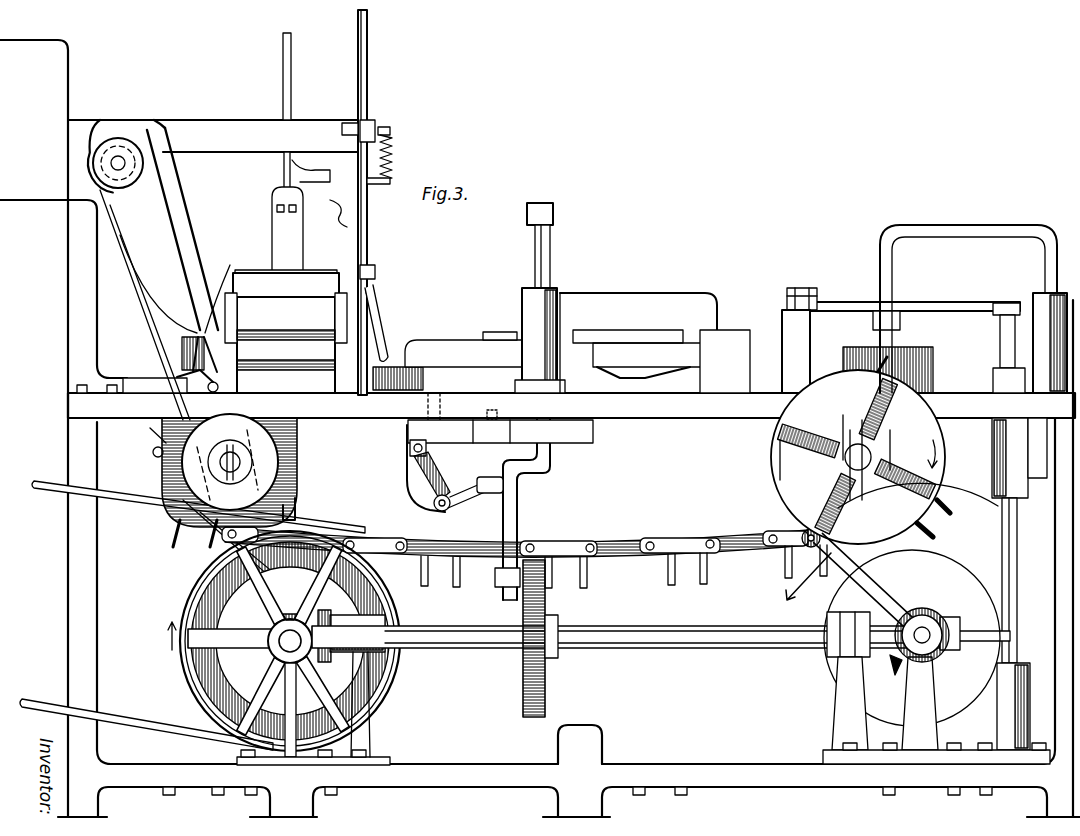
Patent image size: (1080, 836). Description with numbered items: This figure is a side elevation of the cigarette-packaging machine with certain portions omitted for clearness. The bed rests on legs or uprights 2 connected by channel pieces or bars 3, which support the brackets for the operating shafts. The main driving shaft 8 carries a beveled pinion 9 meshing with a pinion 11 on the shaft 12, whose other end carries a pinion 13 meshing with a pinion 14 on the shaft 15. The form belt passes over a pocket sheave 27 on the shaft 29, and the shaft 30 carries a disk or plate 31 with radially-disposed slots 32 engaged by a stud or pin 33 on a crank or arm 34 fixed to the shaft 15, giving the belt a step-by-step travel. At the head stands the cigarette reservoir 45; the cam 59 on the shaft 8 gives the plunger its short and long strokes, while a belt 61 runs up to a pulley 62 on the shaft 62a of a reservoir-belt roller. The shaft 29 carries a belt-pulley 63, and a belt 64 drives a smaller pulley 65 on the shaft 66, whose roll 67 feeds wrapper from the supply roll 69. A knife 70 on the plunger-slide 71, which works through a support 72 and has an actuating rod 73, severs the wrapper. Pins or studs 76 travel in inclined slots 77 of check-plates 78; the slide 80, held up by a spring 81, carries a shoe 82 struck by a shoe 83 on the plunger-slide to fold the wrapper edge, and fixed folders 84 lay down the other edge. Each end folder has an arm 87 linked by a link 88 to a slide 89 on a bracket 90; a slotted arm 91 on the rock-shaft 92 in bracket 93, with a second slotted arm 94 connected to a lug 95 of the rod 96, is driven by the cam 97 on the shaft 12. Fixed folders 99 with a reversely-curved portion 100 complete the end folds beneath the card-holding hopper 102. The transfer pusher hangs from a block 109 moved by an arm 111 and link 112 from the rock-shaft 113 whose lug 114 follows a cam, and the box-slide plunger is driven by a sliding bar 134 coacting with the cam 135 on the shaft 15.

The legs or uprights 2 is at (94, 652).
The channel pieces or bars 3 is at (672, 763).
The main driving shaft 8 is at (260, 648).
The beveled pinion 9 is at (289, 612).
The beveled pinion 11 is at (325, 615).
The shaft 12 is at (455, 641).
The beveled pinion 13 is at (900, 665).
The beveled pinion 14 is at (925, 630).
The shaft 15 is at (932, 620).
The pocket sheave 27 is at (290, 487).
The shaft 29 is at (240, 463).
The shaft 30 is at (868, 452).
The disk or plate 31 is at (808, 461).
The radially-disposed slots 32 is at (790, 448).
The stud or pin 33 is at (805, 545).
The crank or arm 34 is at (808, 584).
The reservoir 45 is at (23, 122).
The cam 59 is at (230, 590).
The belt 61 is at (140, 303).
The pulley 62 is at (135, 168).
The shaft 62a is at (113, 165).
The belt-pulley 63 is at (200, 470).
The belt 64 is at (188, 378).
The smaller pulley 65 is at (180, 344).
The shaft 66 is at (225, 287).
The roll 67 is at (286, 362).
The supply roll 69 is at (286, 333).
The knife 70 is at (286, 233).
The plunger-slide 71 is at (292, 88).
The support 72 is at (287, 161).
The actuating rod 73 is at (297, 510).
The pins or studs 76 is at (375, 290).
The inclined slots 77 is at (386, 324).
The check-pieces or plates 78 is at (390, 362).
The slide 80 is at (367, 88).
The spring 81 is at (392, 152).
The knee or shoe 82 is at (350, 210).
The knee or shoe 83 is at (318, 166).
The fixed folders 84 is at (437, 347).
The downwardly-projecting arm 87 is at (428, 404).
The link 88 is at (465, 416).
The slide 89 is at (457, 420).
The bracket or support 90 is at (590, 440).
The slotted arm 91 is at (432, 475).
The rock-shaft 92 is at (434, 506).
The bracket 93 is at (405, 476).
The slotted arm 94 is at (517, 520).
The lug or ear 95 is at (503, 485).
The rod 96 is at (550, 270).
The cam 97 is at (530, 655).
The fixed folders 99 is at (640, 370).
The reversely-curved portion 100 is at (687, 373).
The card-holding hopper 102 is at (655, 343).
The block or slide 109 is at (783, 310).
The arm 111 is at (945, 305).
The link 112 is at (805, 290).
The rock-shaft 113 is at (1010, 520).
The arm or lug 114 is at (1015, 618).
The sliding bar 134 is at (1045, 262).
The cam 135 is at (912, 604).